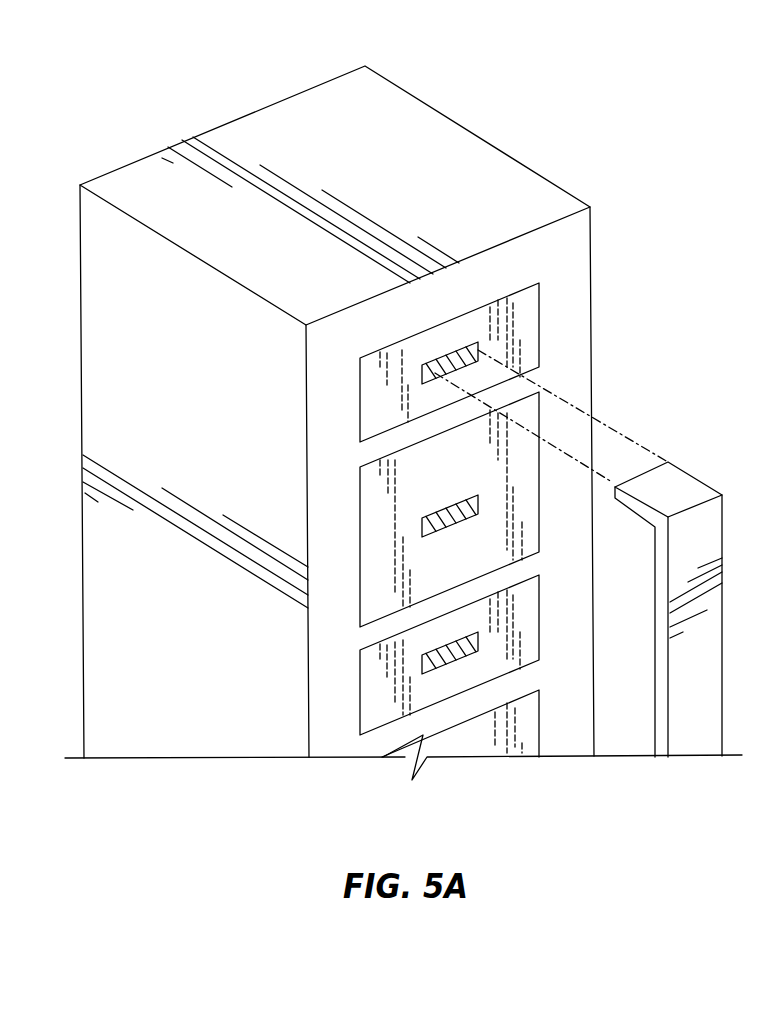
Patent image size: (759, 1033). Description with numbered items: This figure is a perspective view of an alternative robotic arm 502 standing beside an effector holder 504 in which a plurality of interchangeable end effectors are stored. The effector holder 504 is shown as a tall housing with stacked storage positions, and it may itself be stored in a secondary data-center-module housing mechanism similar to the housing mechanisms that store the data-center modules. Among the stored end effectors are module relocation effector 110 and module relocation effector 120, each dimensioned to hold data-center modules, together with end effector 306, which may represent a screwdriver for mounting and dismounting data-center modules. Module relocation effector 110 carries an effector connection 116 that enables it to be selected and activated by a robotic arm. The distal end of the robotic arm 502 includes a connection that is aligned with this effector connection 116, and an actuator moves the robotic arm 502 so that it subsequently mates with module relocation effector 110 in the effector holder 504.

The effector holder 504 is at (245, 115).
The module relocation effector 110 is at (520, 372).
The effector connection 116 is at (480, 349).
The module relocation effector 120 is at (360, 555).
The end effector 306 is at (360, 700).
The robotic arm 502 is at (685, 757).